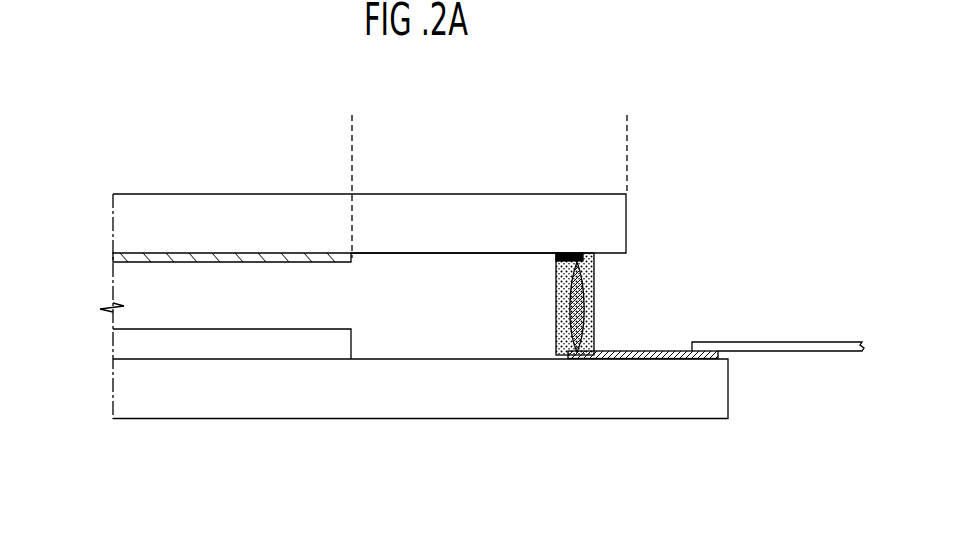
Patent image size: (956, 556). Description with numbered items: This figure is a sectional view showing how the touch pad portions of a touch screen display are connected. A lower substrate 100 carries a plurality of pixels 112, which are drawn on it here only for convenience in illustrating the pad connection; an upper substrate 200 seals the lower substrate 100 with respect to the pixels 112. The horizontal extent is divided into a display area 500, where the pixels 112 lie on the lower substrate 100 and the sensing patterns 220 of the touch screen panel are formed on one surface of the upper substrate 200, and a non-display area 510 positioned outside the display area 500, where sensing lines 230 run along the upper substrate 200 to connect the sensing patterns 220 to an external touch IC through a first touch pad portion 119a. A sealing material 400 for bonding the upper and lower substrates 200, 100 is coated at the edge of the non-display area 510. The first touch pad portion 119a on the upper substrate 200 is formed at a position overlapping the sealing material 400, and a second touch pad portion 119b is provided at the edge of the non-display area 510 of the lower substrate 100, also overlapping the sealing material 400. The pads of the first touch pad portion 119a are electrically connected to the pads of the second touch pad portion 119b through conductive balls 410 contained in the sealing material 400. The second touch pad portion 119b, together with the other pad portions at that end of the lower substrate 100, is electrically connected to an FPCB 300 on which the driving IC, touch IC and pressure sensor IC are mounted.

The lower substrate 100 is at (717, 390).
The pixels 112 is at (117, 350).
The first touch pad portion 119a is at (570, 254).
The second touch pad portion 119b is at (630, 359).
The upper substrate 200 is at (627, 222).
The sensing patterns 220 is at (112, 258).
The sensing lines 230 is at (453, 256).
The FPCB 300 is at (822, 343).
The sealing material 400 is at (590, 293).
The conductive balls 410 is at (586, 322).
The display area 500 is at (350, 128).
The non-display area 510 is at (627, 128).